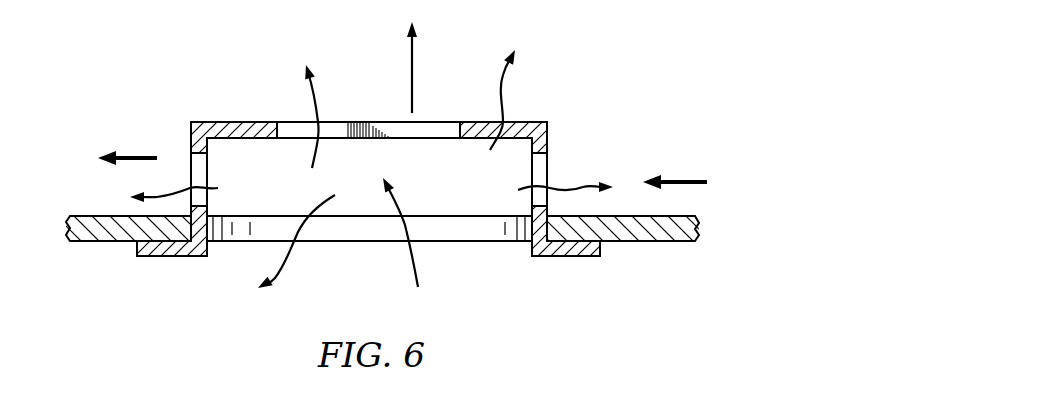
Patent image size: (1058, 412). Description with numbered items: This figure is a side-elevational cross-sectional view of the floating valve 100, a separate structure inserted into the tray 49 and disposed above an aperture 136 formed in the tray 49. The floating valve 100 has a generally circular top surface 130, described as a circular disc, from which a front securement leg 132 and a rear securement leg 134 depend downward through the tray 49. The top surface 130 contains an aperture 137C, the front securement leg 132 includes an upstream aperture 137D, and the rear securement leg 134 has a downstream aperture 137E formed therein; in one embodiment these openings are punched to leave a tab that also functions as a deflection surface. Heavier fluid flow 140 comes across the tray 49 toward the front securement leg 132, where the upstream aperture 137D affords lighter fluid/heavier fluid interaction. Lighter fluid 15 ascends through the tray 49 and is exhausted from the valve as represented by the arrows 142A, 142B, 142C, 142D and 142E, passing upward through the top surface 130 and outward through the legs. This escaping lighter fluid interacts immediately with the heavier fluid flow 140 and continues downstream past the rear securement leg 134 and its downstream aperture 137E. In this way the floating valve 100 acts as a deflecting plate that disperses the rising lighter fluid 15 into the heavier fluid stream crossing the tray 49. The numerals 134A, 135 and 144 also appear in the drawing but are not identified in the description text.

The floating valve 100 is at (264, 61).
The lighter fluid 15 is at (413, 273).
The tray 49 is at (647, 243).
The top surface 130 is at (527, 122).
The front securement leg 132 is at (547, 125).
The rear securement leg 134 is at (190, 132).
The airflow through top wall opening 134A is at (322, 100).
The top wall segment 135 is at (243, 122).
The aperture 136 is at (475, 232).
The aperture 137C is at (442, 122).
The upstream aperture 137D is at (540, 200).
The downstream aperture 137E is at (200, 163).
The heavier fluid flow 140 is at (693, 178).
The arrow 142A is at (412, 53).
The arrow 142B is at (290, 263).
The arrow 142C is at (127, 185).
The arrow 142D is at (491, 70).
The arrow 142E is at (583, 180).
The outgoing airflow 144 is at (140, 155).